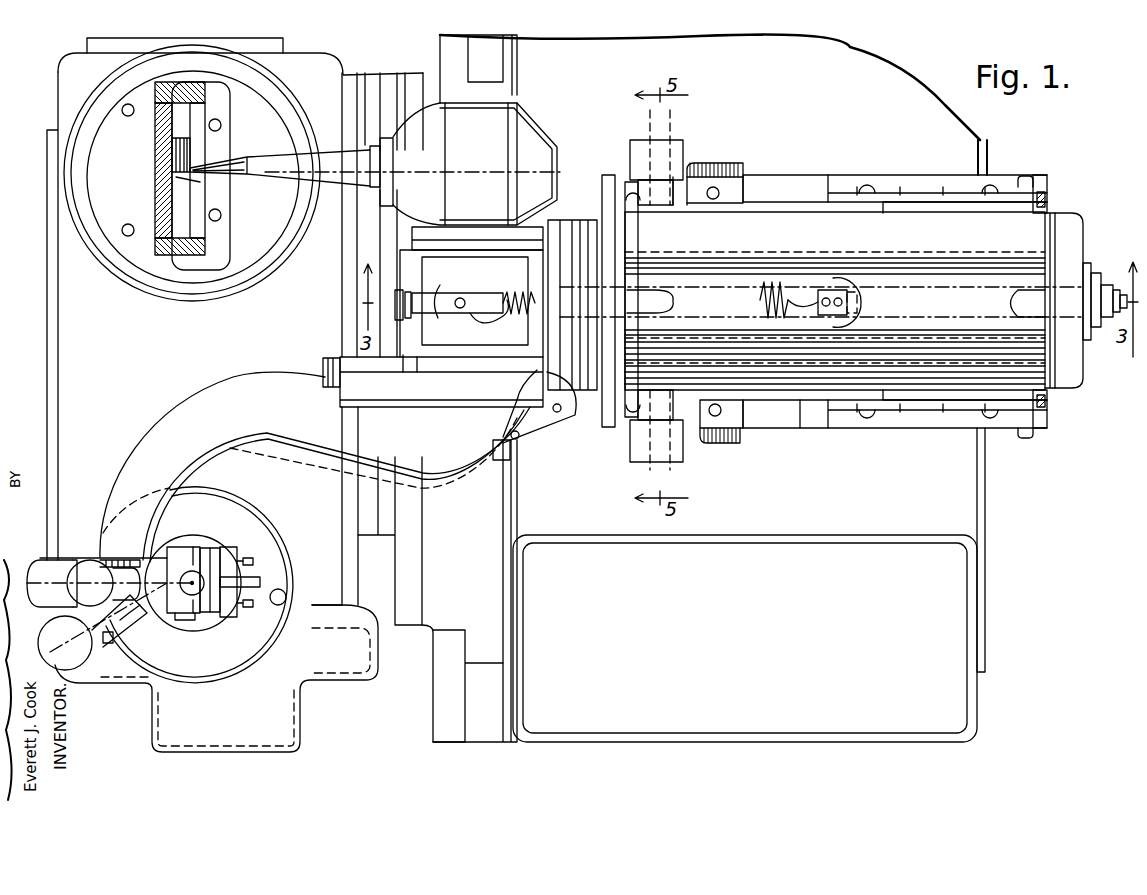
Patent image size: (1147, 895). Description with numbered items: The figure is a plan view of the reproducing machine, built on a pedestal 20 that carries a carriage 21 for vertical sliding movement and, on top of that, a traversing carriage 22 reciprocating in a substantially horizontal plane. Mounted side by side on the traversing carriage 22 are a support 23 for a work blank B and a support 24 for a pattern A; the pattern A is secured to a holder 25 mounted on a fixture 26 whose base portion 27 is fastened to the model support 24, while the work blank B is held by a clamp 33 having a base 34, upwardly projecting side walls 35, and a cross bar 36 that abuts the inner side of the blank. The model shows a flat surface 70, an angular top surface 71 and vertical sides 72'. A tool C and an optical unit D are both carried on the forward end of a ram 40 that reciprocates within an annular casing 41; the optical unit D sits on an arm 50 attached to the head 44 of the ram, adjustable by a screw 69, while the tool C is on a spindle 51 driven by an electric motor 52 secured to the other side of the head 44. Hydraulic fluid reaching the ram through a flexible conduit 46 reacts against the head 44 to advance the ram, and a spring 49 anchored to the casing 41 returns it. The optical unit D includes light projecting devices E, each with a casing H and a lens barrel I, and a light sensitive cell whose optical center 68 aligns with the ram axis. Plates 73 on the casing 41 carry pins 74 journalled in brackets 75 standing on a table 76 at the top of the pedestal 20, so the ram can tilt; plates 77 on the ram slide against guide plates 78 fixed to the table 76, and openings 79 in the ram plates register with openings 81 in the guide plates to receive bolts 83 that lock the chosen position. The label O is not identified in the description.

The pedestal 20 is at (590, 745).
The carriage 21 is at (440, 607).
The traversing carriage 22 is at (60, 368).
The support 23 is at (250, 245).
The support 24 is at (247, 533).
The holder 25 is at (208, 547).
The fixture 26 is at (237, 617).
The base portion 27 is at (188, 547).
The clamp 33 is at (170, 256).
The base 34 is at (113, 210).
The side walls 35 is at (163, 95).
The cross bar 36 is at (207, 200).
The ram 40 is at (567, 227).
The annular casing 41 is at (768, 227).
The head 44 is at (530, 407).
The flexible conduit 46 is at (1120, 290).
The spring 49 is at (788, 292).
The arm 50 is at (150, 427).
The spindle 51 is at (307, 173).
The electric motor 52 is at (493, 127).
The optical center 68 is at (92, 652).
The screw 69 is at (323, 368).
The flat surface 70 is at (162, 552).
The top angularly extending surface 71 is at (183, 607).
The vertical sides 72' is at (183, 576).
The plates 73 is at (800, 197).
The pin 74 is at (698, 160).
The brackets 75 is at (630, 150).
The table 76 is at (810, 418).
The plates 77 is at (922, 200).
The guide plates 78 is at (912, 190).
The openings 79 is at (1047, 201).
The openings 81 is at (1047, 190).
The bolts 83 is at (1026, 176).
The pattern A is at (135, 615).
The work blank B is at (187, 155).
The tool C is at (180, 172).
The optical unit D is at (82, 560).
The light projecting devices E is at (40, 560).
The casing H is at (75, 558).
The lens barrel I is at (125, 568).
The point O is at (113, 637).